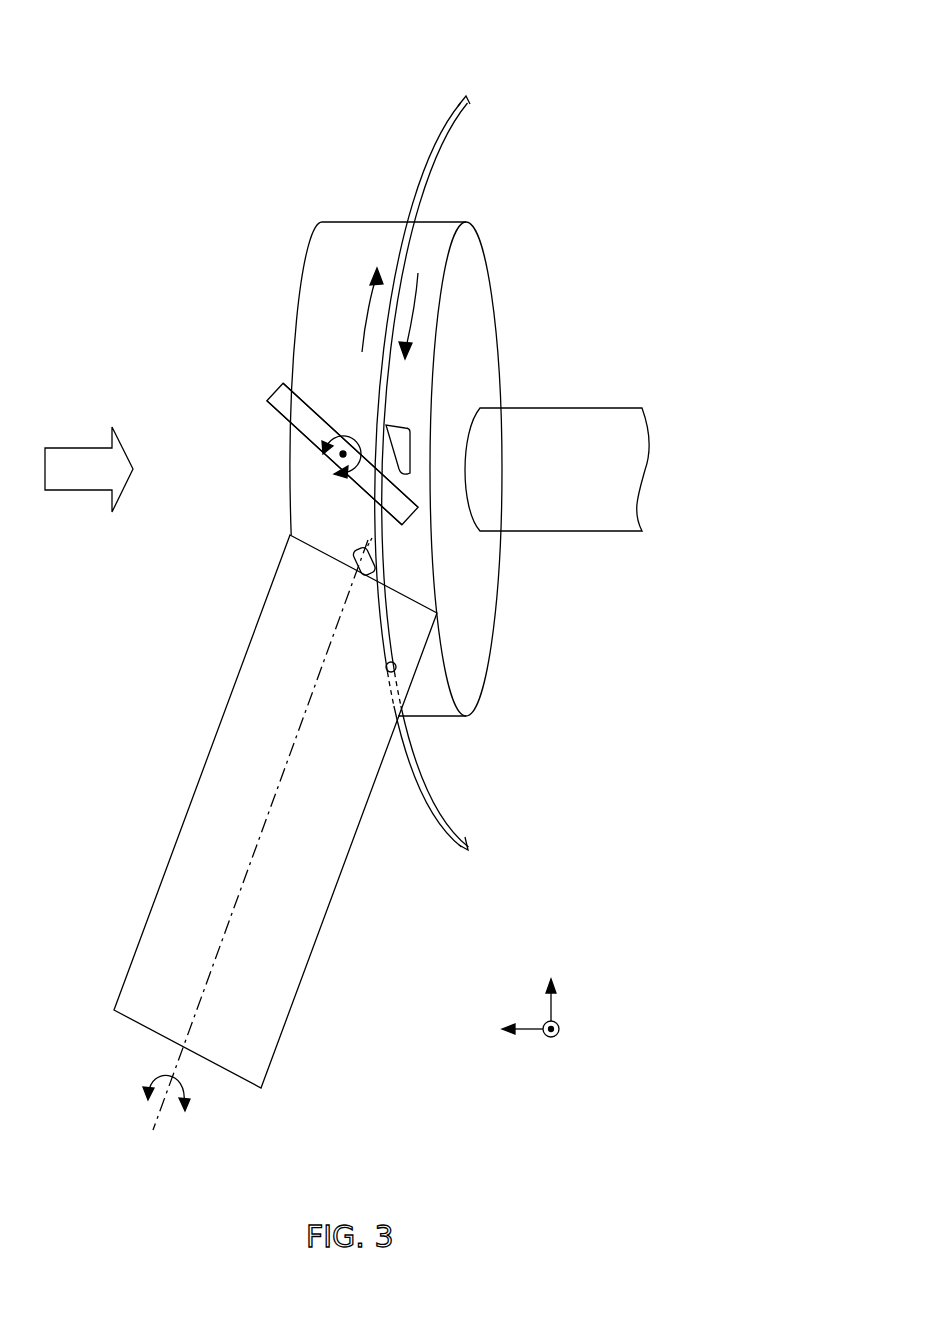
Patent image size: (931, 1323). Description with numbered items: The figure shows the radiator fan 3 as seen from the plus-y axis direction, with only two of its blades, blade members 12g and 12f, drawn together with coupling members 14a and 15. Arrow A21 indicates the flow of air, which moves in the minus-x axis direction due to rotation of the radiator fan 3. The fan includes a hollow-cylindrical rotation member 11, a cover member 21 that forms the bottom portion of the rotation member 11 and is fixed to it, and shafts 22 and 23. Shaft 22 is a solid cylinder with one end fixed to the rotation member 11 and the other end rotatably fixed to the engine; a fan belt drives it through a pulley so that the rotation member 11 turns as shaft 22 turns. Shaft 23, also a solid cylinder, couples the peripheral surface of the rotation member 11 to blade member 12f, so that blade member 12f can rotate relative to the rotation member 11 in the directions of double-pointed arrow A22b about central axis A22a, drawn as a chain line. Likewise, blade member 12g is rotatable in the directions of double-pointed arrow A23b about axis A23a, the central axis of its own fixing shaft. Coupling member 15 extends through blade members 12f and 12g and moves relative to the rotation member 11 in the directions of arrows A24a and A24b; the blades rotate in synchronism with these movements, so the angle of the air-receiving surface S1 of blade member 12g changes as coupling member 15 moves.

The radiator fan 3 is at (347, 571).
The rotation member 11 is at (347, 222).
The blade member 12f is at (203, 770).
The blade member 12g is at (284, 385).
The coupling member 14a is at (388, 424).
The coupling member 15 is at (430, 170).
The cover member 21 is at (487, 377).
The shaft 22 is at (557, 408).
The shaft 23 is at (378, 566).
The surface S1 is at (308, 397).
The arrow A21 is at (83, 448).
The central axis A22a is at (208, 982).
The double-pointed arrow A22b is at (187, 1085).
The central axis A23a is at (338, 468).
The double-pointed arrow A23b is at (326, 440).
The arrow A24a is at (418, 273).
The arrow A24b is at (367, 323).